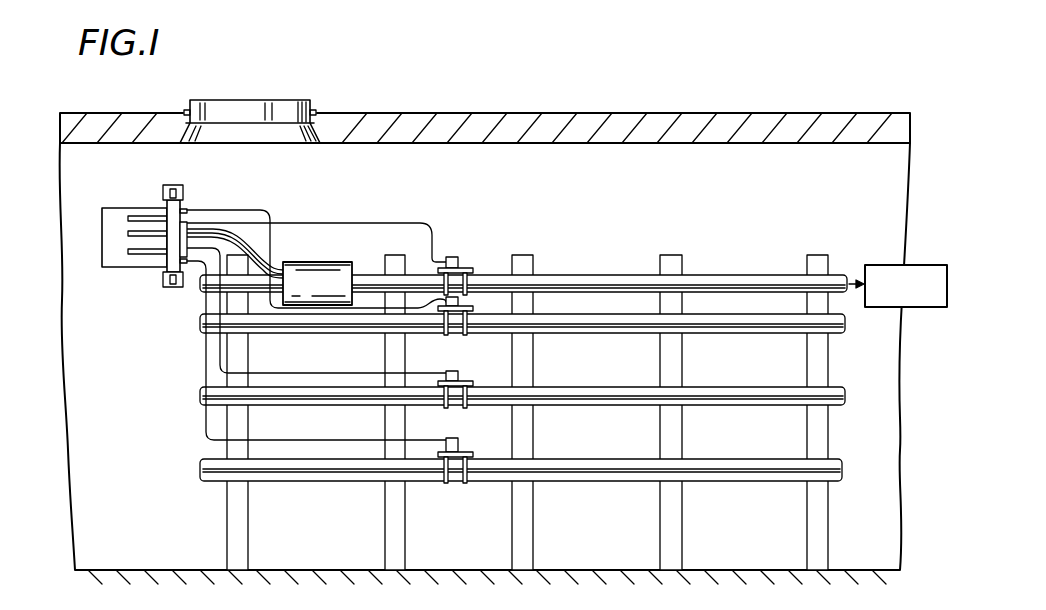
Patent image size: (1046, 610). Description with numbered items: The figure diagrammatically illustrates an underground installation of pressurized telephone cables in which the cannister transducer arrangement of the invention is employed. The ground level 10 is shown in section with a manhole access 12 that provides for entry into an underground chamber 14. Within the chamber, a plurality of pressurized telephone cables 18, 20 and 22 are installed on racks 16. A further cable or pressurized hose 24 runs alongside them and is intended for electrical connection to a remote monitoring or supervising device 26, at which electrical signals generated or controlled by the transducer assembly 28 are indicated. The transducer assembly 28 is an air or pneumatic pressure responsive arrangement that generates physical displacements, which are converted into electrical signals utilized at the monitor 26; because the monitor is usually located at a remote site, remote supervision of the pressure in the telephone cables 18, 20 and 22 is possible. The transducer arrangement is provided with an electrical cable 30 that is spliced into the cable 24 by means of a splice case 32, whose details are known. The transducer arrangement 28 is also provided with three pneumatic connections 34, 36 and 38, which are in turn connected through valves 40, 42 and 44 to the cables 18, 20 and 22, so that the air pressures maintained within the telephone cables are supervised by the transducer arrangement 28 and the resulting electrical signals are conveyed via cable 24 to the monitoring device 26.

The ground level 10 is at (495, 112).
The manhole access 12 is at (310, 101).
The underground chamber 14 is at (160, 382).
The racks 16 is at (390, 427).
The pressurized telephone cable 18 is at (733, 470).
The pressurized telephone cable 20 is at (733, 398).
The pressurized telephone cable 22 is at (730, 322).
The cable or pressurized hose 24 is at (742, 277).
The remote monitoring or supervising device 26 is at (940, 258).
The transducer assembly 28 is at (118, 207).
The electrical cable 30 is at (231, 237).
The splice case 32 is at (334, 248).
The pneumatic connection 34 is at (295, 312).
The pneumatic connection 36 is at (353, 373).
The pneumatic connection 38 is at (312, 440).
The valve 40 is at (474, 328).
The valve 42 is at (460, 375).
The valve 44 is at (460, 437).